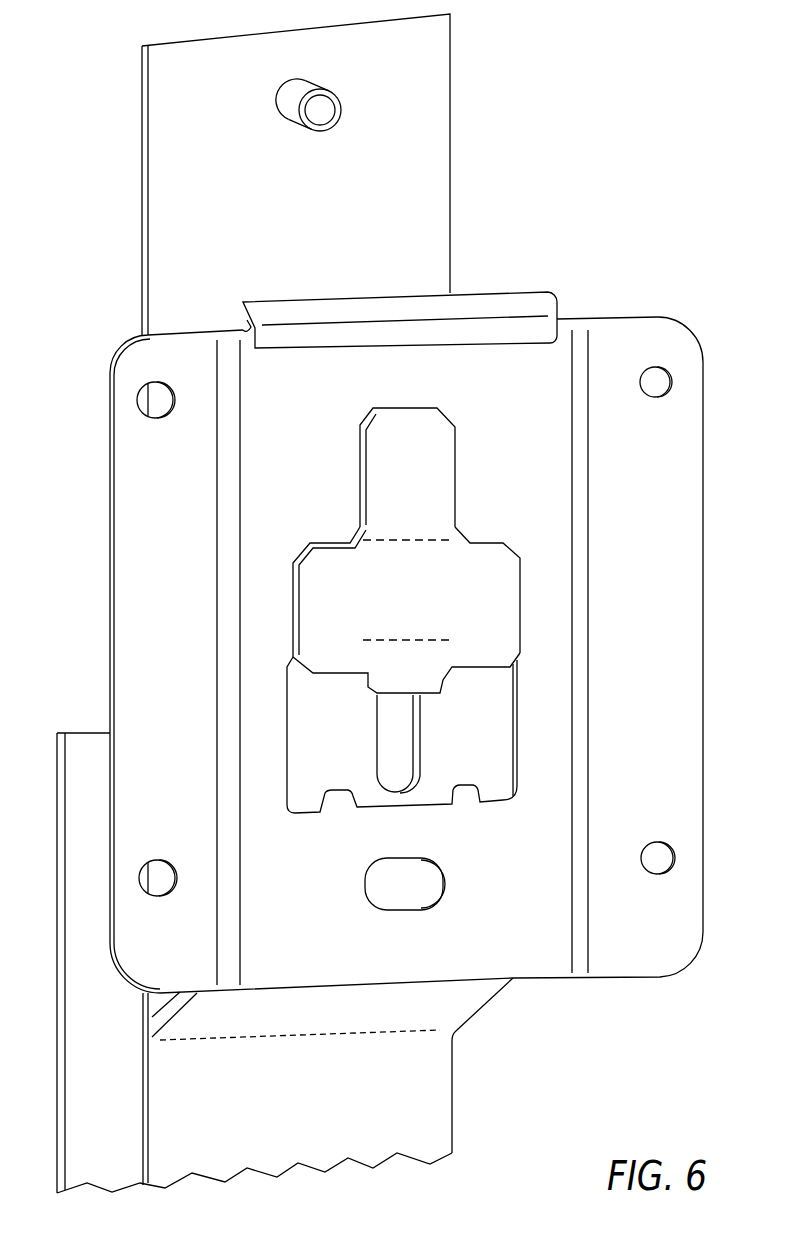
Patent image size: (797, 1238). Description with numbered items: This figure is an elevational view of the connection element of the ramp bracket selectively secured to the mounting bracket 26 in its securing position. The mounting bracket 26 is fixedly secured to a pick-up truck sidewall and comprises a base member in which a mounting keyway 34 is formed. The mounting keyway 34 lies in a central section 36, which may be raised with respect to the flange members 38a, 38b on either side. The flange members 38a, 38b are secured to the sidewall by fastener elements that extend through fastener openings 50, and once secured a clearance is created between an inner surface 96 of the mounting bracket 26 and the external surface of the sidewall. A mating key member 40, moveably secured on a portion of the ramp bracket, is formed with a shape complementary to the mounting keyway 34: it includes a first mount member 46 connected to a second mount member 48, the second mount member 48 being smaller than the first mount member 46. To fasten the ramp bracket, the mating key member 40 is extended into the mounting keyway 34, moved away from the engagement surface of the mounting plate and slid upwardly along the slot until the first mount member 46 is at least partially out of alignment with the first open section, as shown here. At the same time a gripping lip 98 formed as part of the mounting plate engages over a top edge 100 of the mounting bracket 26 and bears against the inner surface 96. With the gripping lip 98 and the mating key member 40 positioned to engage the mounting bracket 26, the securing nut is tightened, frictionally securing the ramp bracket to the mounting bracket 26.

The mounting bracket 26 is at (593, 283).
The mounting keyway 34 is at (493, 745).
The central section 36 is at (501, 484).
The flange member 38a is at (664, 559).
The flange member 38b is at (125, 554).
The mating key member 40 is at (416, 611).
The first mount member 46 is at (480, 634).
The second mount member 48 is at (425, 459).
The fastener opening 50 is at (662, 368).
The inner surface 96 is at (504, 880).
The gripping lip 98 is at (510, 273).
The top edge 100 is at (243, 330).